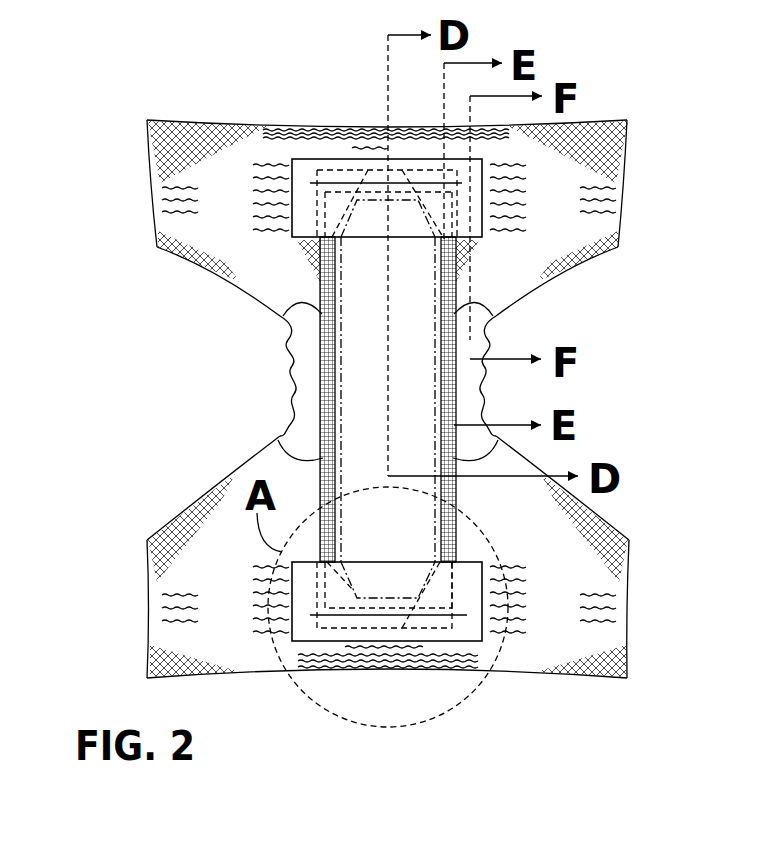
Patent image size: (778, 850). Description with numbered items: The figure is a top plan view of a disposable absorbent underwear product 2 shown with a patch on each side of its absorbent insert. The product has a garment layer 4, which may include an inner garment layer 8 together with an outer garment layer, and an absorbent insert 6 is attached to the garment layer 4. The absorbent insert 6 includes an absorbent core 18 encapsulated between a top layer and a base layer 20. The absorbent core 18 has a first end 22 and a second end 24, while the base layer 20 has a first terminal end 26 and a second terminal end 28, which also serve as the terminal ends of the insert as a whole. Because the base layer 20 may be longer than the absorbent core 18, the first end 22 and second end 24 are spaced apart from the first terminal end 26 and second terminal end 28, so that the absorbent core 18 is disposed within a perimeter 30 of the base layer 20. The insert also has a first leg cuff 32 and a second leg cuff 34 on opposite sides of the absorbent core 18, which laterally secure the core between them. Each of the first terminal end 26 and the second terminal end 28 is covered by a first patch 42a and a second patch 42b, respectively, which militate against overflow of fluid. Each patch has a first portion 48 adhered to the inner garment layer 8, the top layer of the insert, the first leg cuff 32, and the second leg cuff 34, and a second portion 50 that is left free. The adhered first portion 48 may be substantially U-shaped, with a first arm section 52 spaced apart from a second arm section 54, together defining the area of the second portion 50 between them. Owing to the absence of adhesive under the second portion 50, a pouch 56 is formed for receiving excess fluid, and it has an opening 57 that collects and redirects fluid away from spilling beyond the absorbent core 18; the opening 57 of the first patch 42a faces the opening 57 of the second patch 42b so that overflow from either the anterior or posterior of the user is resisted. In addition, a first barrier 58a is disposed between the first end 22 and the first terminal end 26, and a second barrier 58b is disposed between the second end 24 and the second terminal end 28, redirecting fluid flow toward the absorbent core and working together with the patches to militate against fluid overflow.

The disposable absorbent underwear product 2 is at (132, 138).
The garment layer 4 is at (186, 130).
The absorbent insert 6 is at (458, 493).
The inner garment layer 8 is at (482, 243).
The absorbent core 18 is at (322, 362).
The base layer 20 is at (348, 168).
The first end 22 is at (374, 196).
The second end 24 is at (345, 628).
The first terminal end 26 is at (313, 163).
The second terminal end 28 is at (448, 634).
The perimeter 30 is at (322, 567).
The first leg cuff 32 is at (327, 320).
The second leg cuff 34 is at (433, 322).
The first patch 42a is at (305, 186).
The second patch 42b is at (470, 613).
The first portion 48 is at (312, 214).
The second portion 50 is at (452, 205).
The first arm section 52 is at (312, 582).
The second arm section 54 is at (472, 577).
The pouch 56 is at (418, 188).
The opening 57 is at (370, 244).
The first barrier 58a is at (461, 183).
The second barrier 58b is at (361, 606).